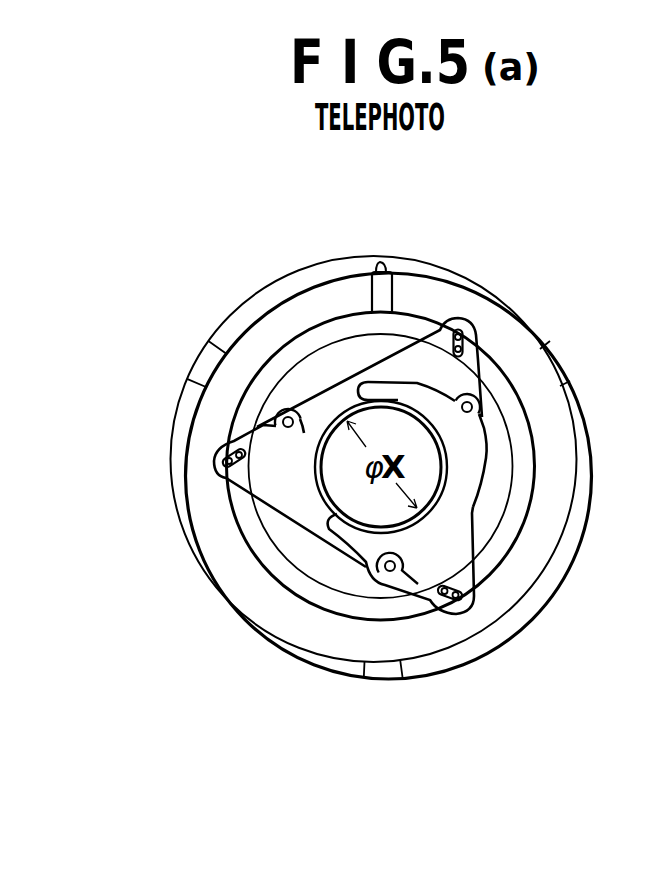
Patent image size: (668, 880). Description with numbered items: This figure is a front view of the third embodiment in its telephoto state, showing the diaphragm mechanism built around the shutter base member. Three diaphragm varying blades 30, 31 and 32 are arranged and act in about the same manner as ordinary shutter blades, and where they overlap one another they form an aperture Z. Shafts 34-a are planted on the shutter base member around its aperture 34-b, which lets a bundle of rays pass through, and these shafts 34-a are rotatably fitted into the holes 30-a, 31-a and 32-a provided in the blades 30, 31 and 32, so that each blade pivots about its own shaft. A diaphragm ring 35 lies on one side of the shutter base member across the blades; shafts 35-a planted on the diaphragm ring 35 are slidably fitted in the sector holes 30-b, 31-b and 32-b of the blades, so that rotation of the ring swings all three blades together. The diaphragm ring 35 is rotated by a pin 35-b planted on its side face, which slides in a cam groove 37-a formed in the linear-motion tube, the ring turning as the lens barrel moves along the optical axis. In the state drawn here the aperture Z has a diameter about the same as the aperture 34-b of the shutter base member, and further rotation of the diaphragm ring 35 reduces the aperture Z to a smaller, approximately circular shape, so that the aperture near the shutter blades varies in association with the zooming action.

The diaphragm varying blade 30 is at (448, 551).
The hole 30-a is at (416, 578).
The cam slot of blade 30 30-b is at (463, 607).
The diaphragm varying blade 31 is at (427, 352).
The hole 31-a is at (474, 358).
The cam slot of blade 31 31-b is at (470, 320).
The diaphragm varying blade 32 is at (260, 475).
The hole 32-a is at (260, 424).
The cam slot of blade 32 32-b is at (218, 477).
The shaft 34-a is at (287, 415).
The aperture 34-b is at (358, 509).
The diaphragm ring 35 is at (280, 560).
The shaft 35-a is at (472, 340).
The pin 35-b is at (397, 298).
The cam groove 37-a is at (380, 262).
The aperture Z is at (336, 442).